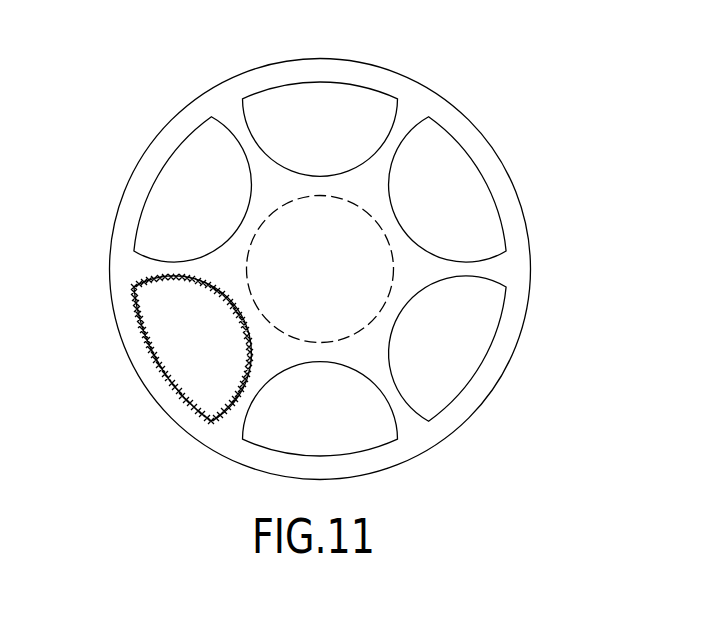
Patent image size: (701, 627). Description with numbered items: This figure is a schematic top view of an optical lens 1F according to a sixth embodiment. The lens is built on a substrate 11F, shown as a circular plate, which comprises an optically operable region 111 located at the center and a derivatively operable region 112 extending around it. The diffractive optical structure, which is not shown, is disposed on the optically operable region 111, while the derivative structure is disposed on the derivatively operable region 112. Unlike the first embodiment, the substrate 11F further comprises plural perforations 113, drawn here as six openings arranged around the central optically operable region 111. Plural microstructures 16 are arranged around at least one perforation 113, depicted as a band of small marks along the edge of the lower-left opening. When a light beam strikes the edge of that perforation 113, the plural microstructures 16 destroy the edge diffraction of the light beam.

The optical lens 1F is at (233, 43).
The substrate 11F is at (424, 432).
The microstructures 16 is at (127, 283).
The optically operable region 111 is at (358, 242).
The derivatively operable region 112 is at (493, 367).
The perforations 113 is at (325, 98).